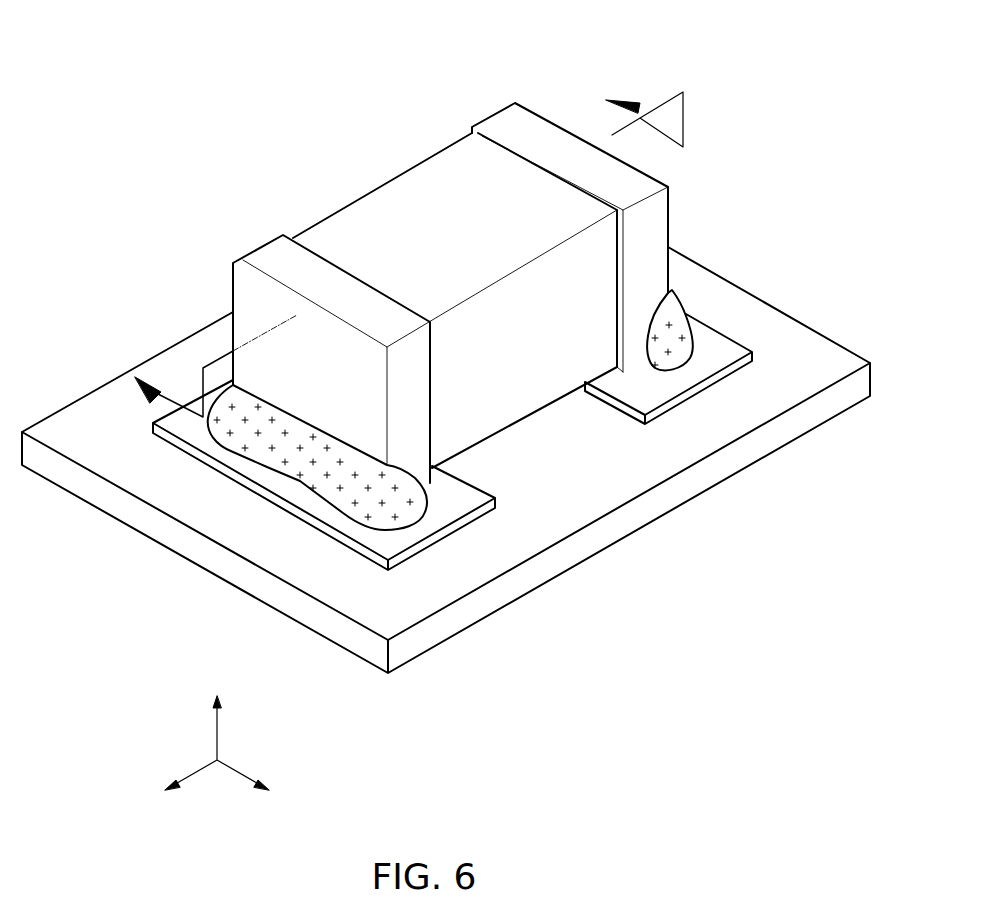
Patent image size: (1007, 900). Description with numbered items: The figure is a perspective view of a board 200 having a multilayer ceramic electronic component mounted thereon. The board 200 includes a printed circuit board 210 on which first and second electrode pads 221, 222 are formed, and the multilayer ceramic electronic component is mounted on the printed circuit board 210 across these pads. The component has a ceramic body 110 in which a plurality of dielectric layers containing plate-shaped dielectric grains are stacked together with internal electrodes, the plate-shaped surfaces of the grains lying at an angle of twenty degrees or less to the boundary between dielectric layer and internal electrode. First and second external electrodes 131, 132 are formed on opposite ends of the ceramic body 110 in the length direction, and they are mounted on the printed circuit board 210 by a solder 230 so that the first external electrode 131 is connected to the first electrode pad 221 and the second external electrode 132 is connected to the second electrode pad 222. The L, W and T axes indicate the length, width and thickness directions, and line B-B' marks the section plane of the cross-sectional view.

The board having a multilayer ceramic electronic component mounted thereon 200 is at (192, 71).
The ceramic body 110 is at (390, 198).
The first external electrode 131 is at (267, 258).
The second external electrode 132 is at (543, 127).
The printed circuit board 210 is at (597, 500).
The first electrode pad 221 is at (453, 505).
The second electrode pad 222 is at (660, 387).
The solder 230 is at (293, 452).